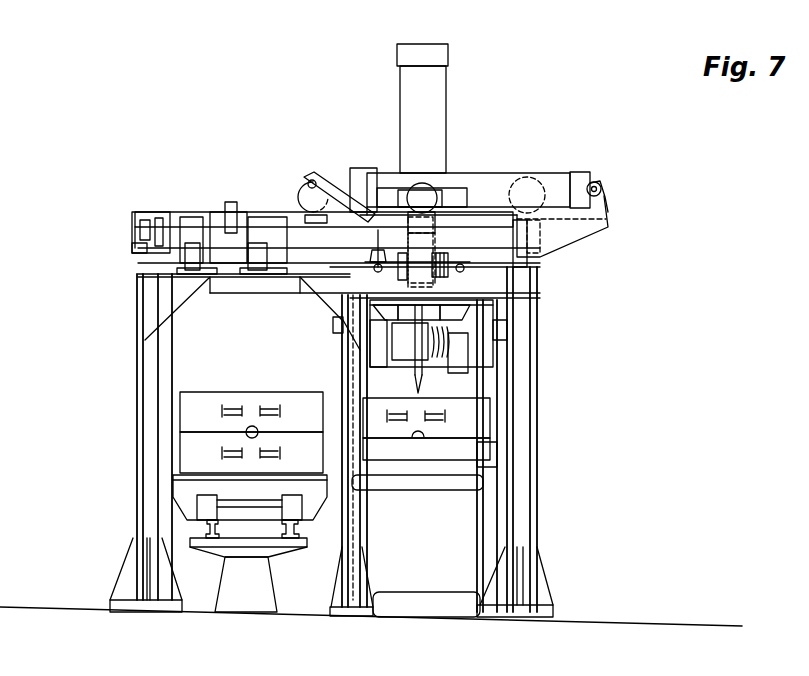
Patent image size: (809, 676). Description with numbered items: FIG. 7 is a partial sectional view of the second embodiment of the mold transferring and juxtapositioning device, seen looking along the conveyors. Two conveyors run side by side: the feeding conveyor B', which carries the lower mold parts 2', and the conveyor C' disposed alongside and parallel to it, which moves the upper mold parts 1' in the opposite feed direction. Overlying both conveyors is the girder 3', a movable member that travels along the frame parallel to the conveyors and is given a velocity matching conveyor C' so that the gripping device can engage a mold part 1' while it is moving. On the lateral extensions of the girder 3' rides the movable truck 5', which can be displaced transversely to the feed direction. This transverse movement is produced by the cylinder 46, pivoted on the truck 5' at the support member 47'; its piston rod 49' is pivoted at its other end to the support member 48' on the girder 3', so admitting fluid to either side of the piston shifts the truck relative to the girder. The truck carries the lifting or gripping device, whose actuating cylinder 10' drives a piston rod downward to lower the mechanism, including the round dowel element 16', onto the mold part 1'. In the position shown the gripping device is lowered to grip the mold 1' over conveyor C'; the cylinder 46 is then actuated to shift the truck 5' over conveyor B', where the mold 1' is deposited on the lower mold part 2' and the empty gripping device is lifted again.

The actuating cylinder 10' is at (460, 155).
The support member 48' is at (316, 153).
The piston rod 49' is at (360, 145).
The cylinder 46 is at (507, 183).
The support member 47' is at (637, 185).
The movable truck 5' is at (587, 232).
The girder 3' is at (369, 255).
The round dowel element 16' is at (438, 350).
The upper mold part 1' is at (340, 408).
The lower mold part 2' is at (211, 451).
The feeding conveyor B' is at (212, 543).
The conveyor C' is at (466, 527).